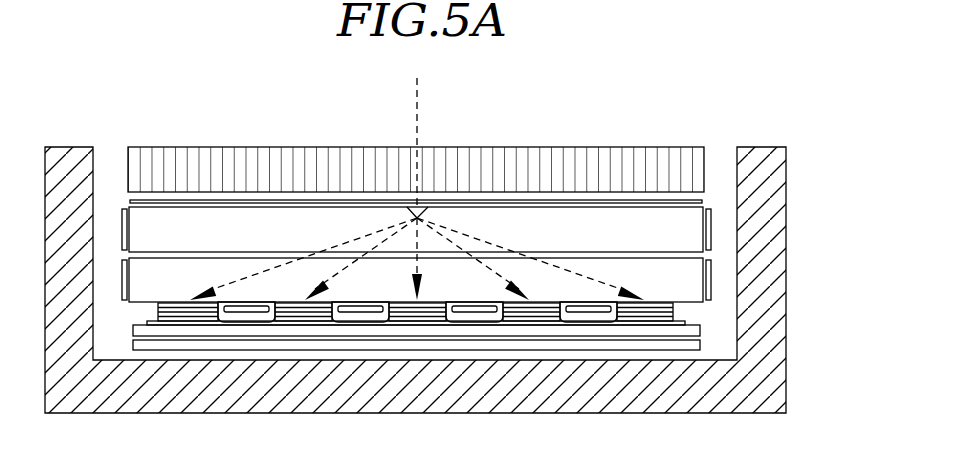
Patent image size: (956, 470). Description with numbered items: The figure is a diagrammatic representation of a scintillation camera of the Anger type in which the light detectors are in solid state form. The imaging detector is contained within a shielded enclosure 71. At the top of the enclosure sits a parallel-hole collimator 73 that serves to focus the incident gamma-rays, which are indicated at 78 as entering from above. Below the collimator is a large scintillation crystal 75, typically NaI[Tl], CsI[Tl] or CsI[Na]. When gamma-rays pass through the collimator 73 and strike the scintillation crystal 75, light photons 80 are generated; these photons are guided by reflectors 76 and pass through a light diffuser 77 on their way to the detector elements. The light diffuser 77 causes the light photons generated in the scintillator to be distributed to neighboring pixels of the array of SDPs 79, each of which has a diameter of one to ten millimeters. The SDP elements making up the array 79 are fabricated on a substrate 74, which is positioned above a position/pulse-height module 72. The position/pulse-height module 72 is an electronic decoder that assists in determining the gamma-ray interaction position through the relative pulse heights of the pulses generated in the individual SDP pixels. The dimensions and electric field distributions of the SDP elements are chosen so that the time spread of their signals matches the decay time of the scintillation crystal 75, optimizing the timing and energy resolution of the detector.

The shielded enclosure 71 is at (750, 413).
The position/pulse-height module 72 is at (717, 350).
The parallel-hole collimator 73 is at (703, 165).
The substrate 74 is at (702, 327).
The scintillation crystal 75 is at (706, 229).
The reflectors 76 is at (703, 283).
The light diffuser 77 is at (706, 267).
The incident radiation 78 is at (450, 112).
The array of SDPs 79 is at (673, 308).
The light photons 80 is at (332, 231).